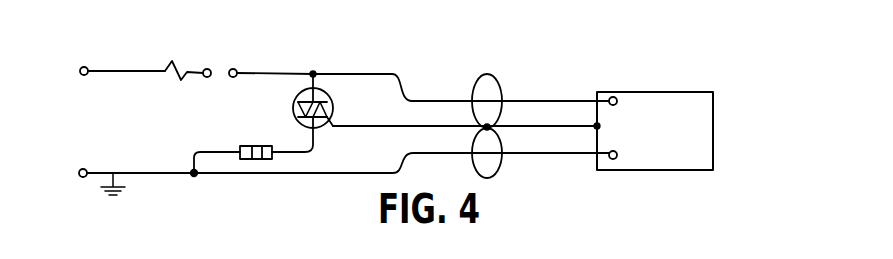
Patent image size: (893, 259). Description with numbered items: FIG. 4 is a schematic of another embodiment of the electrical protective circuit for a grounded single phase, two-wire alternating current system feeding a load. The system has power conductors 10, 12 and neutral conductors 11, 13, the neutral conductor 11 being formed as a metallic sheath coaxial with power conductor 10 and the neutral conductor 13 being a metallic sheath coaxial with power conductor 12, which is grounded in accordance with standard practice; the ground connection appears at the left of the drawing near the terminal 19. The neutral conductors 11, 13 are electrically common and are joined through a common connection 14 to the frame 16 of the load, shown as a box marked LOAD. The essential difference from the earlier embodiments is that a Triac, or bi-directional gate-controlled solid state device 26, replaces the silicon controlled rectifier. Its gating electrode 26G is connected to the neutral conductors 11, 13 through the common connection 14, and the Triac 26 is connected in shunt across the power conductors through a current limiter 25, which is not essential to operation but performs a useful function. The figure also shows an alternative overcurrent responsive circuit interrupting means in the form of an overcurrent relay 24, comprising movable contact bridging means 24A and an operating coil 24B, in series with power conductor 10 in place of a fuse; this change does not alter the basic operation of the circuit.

The power conductor 10 is at (527, 101).
The neutral conductor 11 is at (495, 73).
The power conductor 12 is at (541, 153).
The neutral conductor 13 is at (492, 178).
The common connection 14 is at (368, 126).
The frame 16 is at (670, 92).
The ground terminal 19 is at (97, 188).
The overcurrent relay 24 is at (177, 67).
The movable contact bridging means 24A is at (209, 65).
The operating coil 24B is at (179, 77).
The current limiter 25 is at (243, 146).
The Triac 26 is at (306, 117).
The gating electrode 26G is at (322, 128).